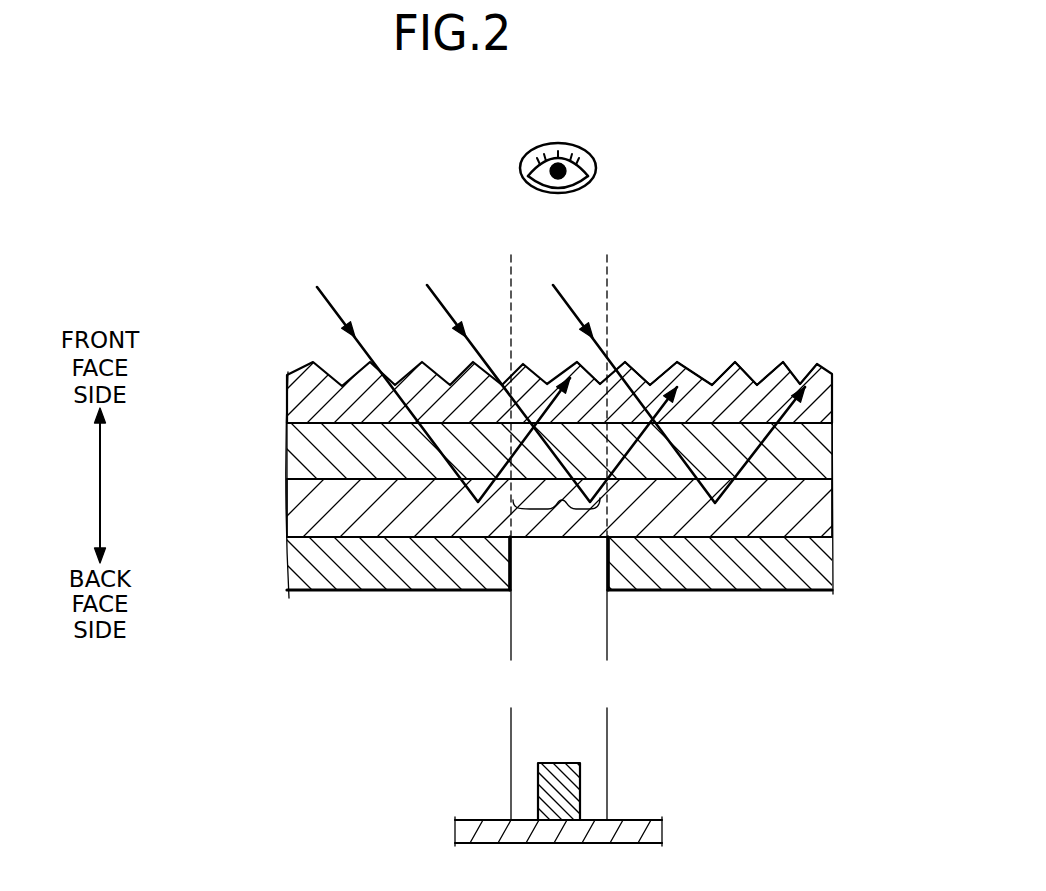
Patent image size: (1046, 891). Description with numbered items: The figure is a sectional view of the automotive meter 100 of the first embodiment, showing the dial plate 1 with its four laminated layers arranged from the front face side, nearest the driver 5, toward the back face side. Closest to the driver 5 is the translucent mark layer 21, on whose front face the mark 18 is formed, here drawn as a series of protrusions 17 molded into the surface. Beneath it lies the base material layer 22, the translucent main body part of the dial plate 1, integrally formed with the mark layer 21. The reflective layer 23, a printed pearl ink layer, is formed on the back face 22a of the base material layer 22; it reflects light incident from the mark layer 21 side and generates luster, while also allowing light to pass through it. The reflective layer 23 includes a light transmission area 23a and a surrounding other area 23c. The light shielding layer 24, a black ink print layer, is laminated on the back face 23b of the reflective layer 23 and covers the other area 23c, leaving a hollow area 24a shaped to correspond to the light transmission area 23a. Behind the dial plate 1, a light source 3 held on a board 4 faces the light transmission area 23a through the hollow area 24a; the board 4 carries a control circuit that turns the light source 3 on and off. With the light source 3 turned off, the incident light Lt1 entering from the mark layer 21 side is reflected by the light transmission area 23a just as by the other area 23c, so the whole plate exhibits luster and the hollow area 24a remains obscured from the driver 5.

The display device 100 is at (362, 118).
The driver 5 is at (557, 143).
The dial plate 1 is at (294, 348).
The light Lt1 is at (330, 297).
The mark 18 is at (688, 248).
The protrusion 17 is at (652, 367).
The mark layer 21 is at (307, 408).
The base material layer 22 is at (307, 453).
The back face of the base material layer 22a is at (362, 482).
The reflective layer 23 is at (307, 510).
The light transmission area 23a is at (562, 509).
The back face of the reflective layer 23b is at (427, 537).
The other area 23c is at (393, 522).
The light shielding layer 24 is at (307, 567).
The hollow area 24a is at (514, 592).
The light source 3 is at (538, 783).
The board 4 is at (636, 816).